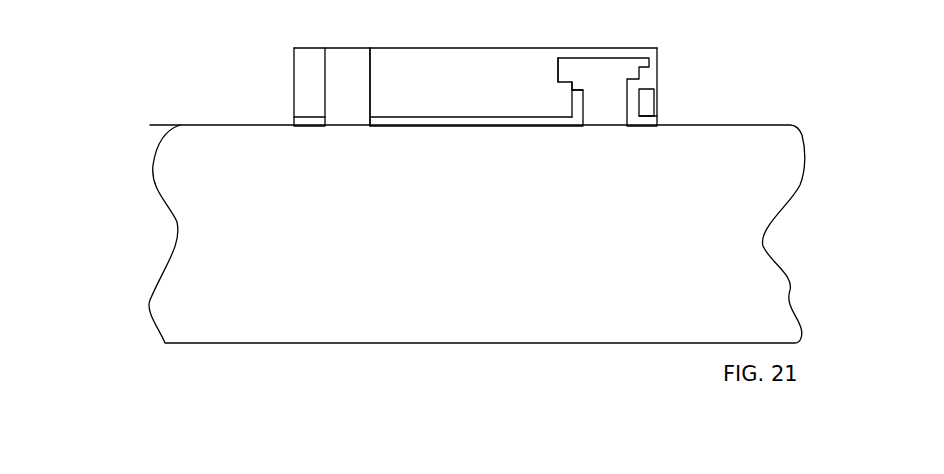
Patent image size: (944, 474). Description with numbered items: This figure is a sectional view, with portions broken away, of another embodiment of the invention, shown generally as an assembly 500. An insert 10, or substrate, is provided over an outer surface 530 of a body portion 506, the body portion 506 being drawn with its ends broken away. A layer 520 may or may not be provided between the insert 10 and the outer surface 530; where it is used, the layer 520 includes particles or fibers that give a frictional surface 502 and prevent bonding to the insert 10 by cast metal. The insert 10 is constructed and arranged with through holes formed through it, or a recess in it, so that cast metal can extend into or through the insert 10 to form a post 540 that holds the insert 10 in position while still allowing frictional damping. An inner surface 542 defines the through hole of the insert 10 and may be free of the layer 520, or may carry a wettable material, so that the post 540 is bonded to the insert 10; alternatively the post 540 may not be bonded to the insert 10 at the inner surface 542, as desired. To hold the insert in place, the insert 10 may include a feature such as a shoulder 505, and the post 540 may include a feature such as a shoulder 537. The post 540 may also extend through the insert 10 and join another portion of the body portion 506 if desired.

The assembly 500 is at (157, 79).
The body portion 506 is at (280, 297).
The outer surface 530 is at (193, 123).
The insert 10 is at (388, 72).
The layer 520 is at (388, 118).
The post 540 is at (338, 47).
The inner surface 542 is at (370, 50).
The shoulder 505 is at (540, 78).
The shoulder 537 is at (570, 88).
The frictional surface 502 is at (438, 138).